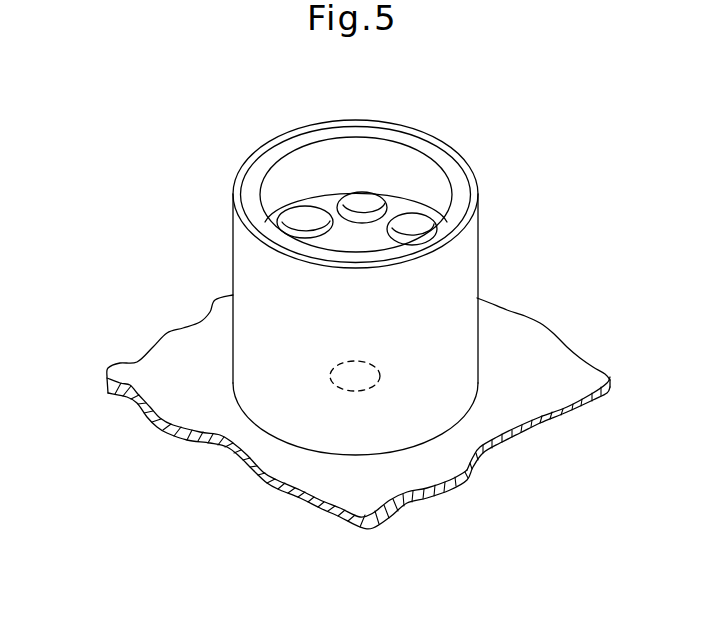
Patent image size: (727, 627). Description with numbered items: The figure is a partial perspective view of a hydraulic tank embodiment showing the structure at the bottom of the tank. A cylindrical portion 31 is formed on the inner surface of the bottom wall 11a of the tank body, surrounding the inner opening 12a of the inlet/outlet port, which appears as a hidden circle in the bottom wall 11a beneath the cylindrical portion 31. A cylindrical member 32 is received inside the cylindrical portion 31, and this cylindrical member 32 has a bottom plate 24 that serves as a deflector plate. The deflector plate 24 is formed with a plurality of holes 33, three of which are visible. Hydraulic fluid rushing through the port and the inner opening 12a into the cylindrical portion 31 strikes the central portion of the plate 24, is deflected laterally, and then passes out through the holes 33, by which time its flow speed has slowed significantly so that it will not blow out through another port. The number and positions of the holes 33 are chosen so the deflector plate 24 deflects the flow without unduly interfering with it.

The cylindrical portion 31 is at (252, 252).
The cylindrical member 32 is at (412, 160).
The bottom plate 24 is at (400, 207).
The holes 33 is at (353, 193).
The bottom wall 11a is at (487, 418).
The inner opening 12a is at (360, 390).